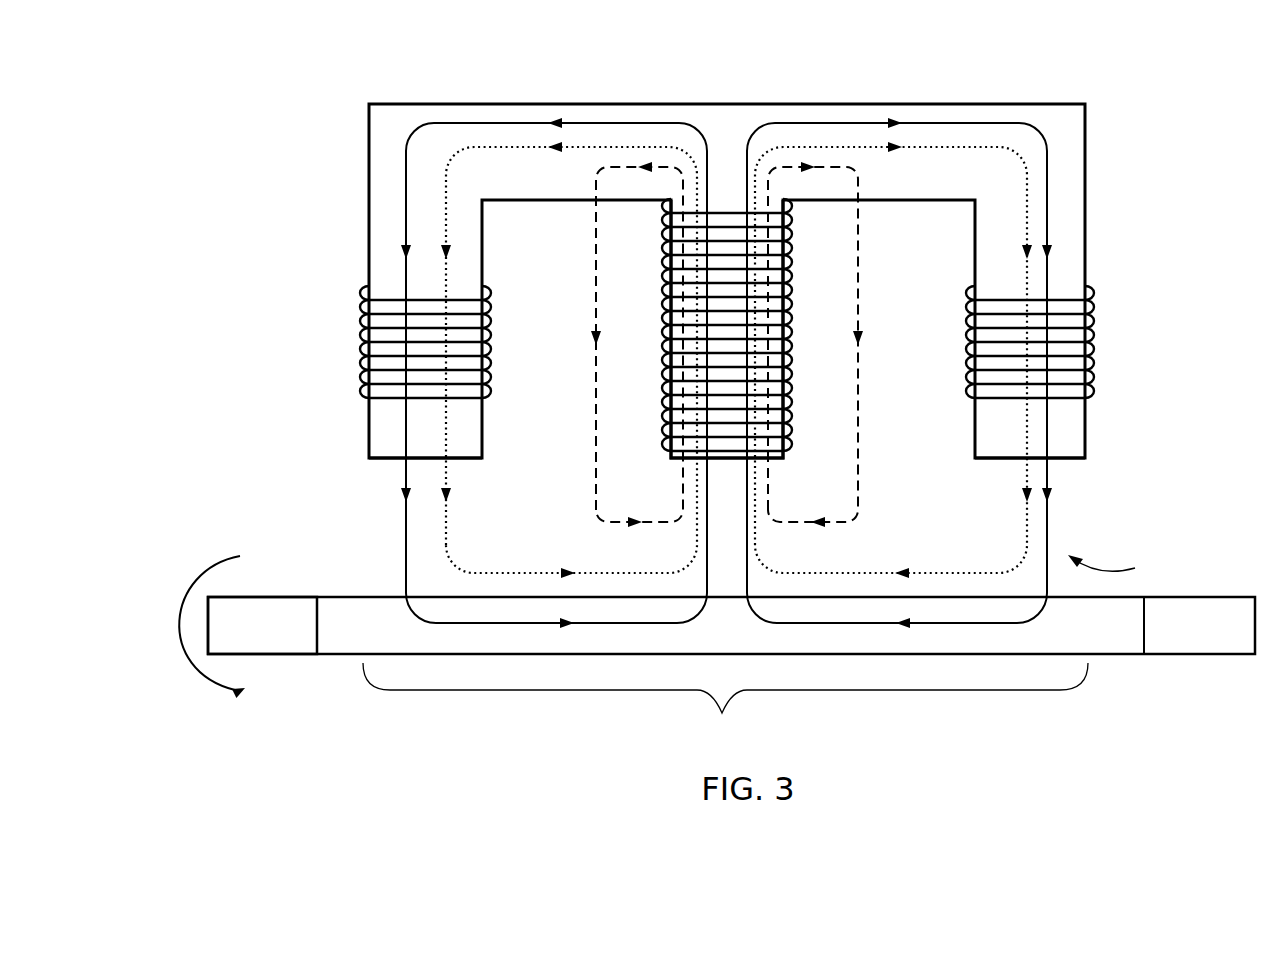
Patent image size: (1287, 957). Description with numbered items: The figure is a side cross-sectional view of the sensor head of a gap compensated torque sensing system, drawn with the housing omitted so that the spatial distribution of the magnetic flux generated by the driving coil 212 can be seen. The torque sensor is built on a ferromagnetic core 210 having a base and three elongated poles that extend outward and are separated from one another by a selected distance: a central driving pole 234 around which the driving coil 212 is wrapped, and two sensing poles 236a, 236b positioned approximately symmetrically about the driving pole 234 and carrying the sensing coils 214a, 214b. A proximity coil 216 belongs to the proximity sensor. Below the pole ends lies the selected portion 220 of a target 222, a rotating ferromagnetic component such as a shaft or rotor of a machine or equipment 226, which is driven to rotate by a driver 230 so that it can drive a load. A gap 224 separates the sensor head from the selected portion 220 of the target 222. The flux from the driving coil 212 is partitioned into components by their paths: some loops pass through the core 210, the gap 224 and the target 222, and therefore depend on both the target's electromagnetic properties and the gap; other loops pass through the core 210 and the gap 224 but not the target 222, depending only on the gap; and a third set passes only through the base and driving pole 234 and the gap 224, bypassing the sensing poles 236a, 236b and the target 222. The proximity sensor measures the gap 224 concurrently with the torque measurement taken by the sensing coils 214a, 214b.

The core 210 is at (903, 103).
The driving coil 212 is at (662, 305).
The driving pole 234 is at (762, 460).
The sensing coil 214a is at (360, 388).
The sensing coil 214b is at (1094, 378).
The proximity coil 216 is at (666, 452).
The sensing pole 236a is at (369, 460).
The sensing pole 236b is at (1078, 460).
The selected portion 220 is at (722, 713).
The target 222 is at (1107, 661).
The gap 224 is at (1123, 563).
The machine or equipment 226 is at (172, 561).
The driver 230 is at (272, 655).